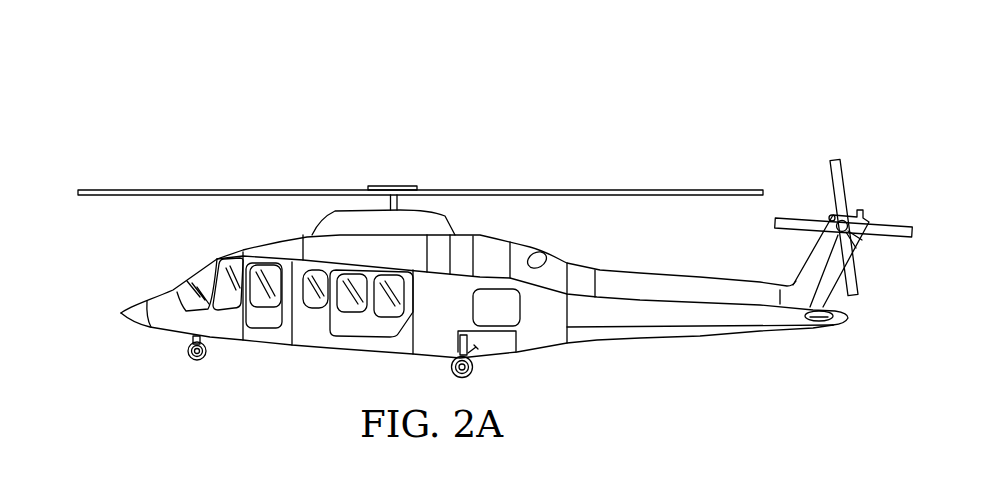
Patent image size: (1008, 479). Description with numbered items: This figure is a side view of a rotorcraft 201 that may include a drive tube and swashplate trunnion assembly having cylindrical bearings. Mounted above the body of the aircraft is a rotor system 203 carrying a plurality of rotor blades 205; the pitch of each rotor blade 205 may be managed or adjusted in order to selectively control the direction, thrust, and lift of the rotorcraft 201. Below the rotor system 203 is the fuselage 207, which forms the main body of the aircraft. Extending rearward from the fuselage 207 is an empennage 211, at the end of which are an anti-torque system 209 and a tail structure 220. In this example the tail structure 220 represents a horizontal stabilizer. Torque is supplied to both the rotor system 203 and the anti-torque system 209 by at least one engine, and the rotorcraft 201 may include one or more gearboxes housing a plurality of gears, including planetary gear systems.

The rotorcraft 201 is at (251, 62).
The rotor system 203 is at (412, 167).
The rotor blades 205 is at (228, 190).
The fuselage 207 is at (312, 350).
The anti-torque system 209 is at (874, 197).
The empennage 211 is at (700, 338).
The tail structure 220 is at (822, 323).